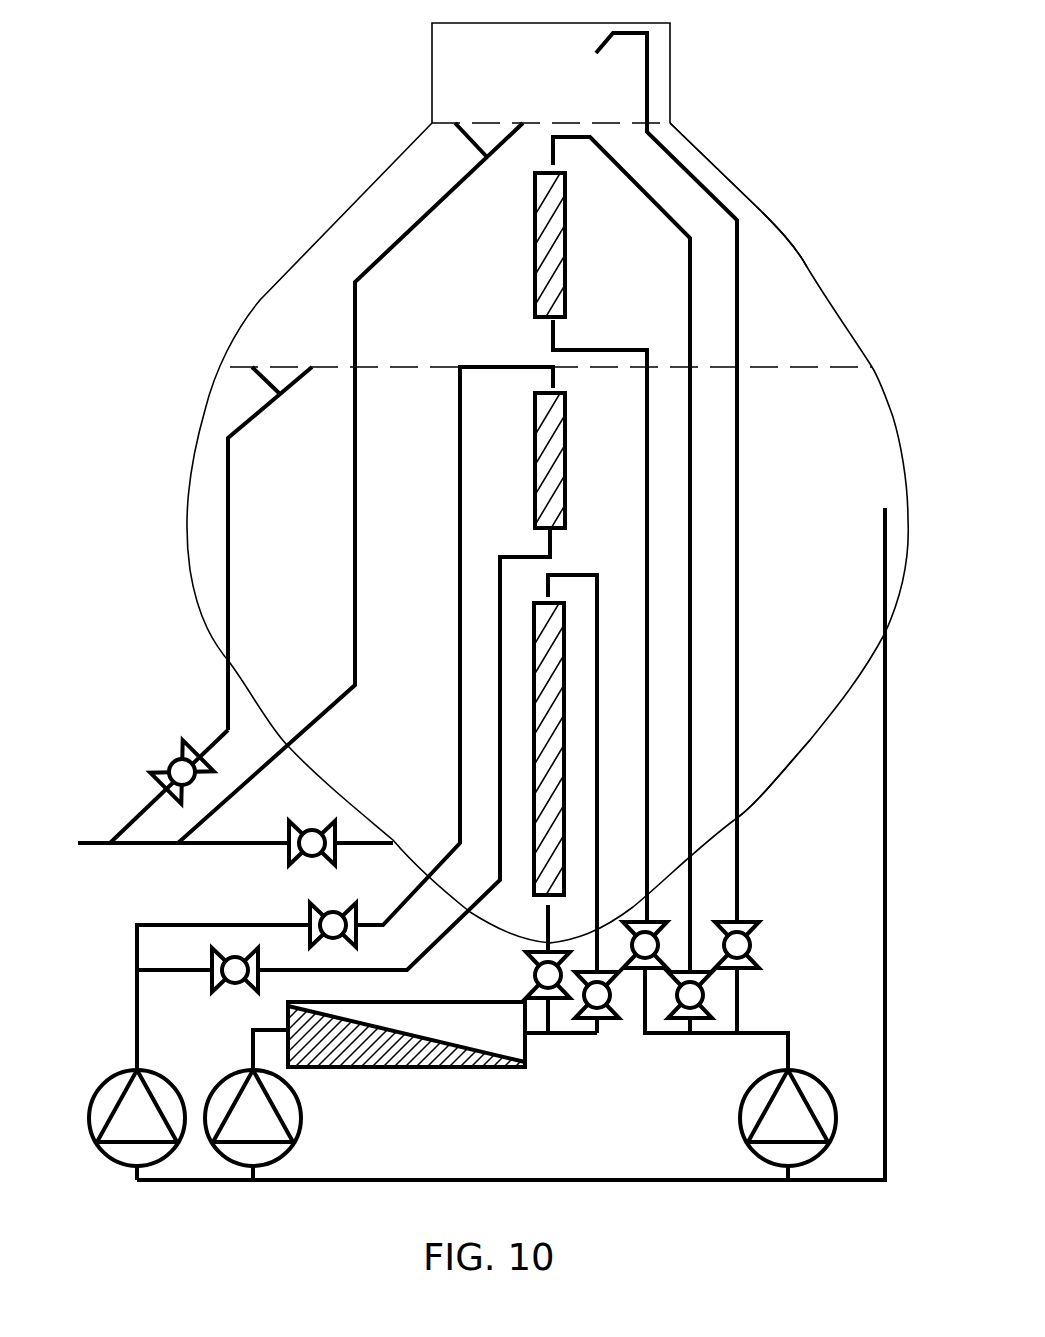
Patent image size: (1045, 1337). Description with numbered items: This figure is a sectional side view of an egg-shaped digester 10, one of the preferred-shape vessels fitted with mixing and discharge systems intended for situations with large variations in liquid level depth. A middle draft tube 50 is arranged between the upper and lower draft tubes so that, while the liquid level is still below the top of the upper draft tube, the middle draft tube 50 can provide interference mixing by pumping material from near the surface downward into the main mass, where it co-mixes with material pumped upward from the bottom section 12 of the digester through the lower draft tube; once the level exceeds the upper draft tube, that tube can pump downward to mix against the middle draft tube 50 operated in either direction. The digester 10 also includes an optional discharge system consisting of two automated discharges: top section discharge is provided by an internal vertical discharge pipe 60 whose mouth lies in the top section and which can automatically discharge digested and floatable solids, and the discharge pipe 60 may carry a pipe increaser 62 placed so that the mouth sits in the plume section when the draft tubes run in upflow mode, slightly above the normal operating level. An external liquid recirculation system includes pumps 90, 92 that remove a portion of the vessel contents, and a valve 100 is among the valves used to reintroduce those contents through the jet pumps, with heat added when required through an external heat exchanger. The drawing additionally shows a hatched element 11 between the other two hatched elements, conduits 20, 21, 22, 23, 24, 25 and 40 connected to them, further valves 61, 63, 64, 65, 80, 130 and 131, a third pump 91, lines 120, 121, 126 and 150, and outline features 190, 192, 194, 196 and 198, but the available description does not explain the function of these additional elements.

The digester 10 is at (570, 232).
The third cell 11 is at (532, 715).
The bottom section 12 is at (570, 450).
The inlet conduit 20 is at (550, 157).
The outlet conduit 21 is at (565, 335).
The inlet conduit 22 is at (562, 580).
The outlet conduit 23 is at (540, 922).
The inlet conduit 24 is at (560, 380).
The outlet conduit 25 is at (543, 540).
The overflow conduit 40 is at (595, 50).
The middle draft tube 50 is at (882, 543).
The internal vertical discharge pipe 60 is at (530, 975).
The valve 61 is at (675, 1025).
The pipe increaser 62 is at (580, 1025).
The valve 63 is at (630, 975).
The valve 64 is at (230, 990).
The valve 65 is at (308, 913).
The valve 80 is at (745, 920).
The pump 90 is at (305, 1115).
The pump 91 is at (820, 1082).
The pump 92 is at (110, 1075).
The valve 100 is at (400, 1070).
The upper liquid level 120 is at (490, 112).
The supply line 121 is at (385, 836).
The lower liquid level 126 is at (280, 360).
The valve 130 is at (312, 830).
The valve 131 is at (172, 755).
The feed line 150 is at (93, 840).
The system 190 is at (222, 145).
The lower chamber 192 is at (775, 785).
The upper chamber 194 is at (770, 213).
The head space 196 is at (445, 48).
The vessel wall 198 is at (908, 482).